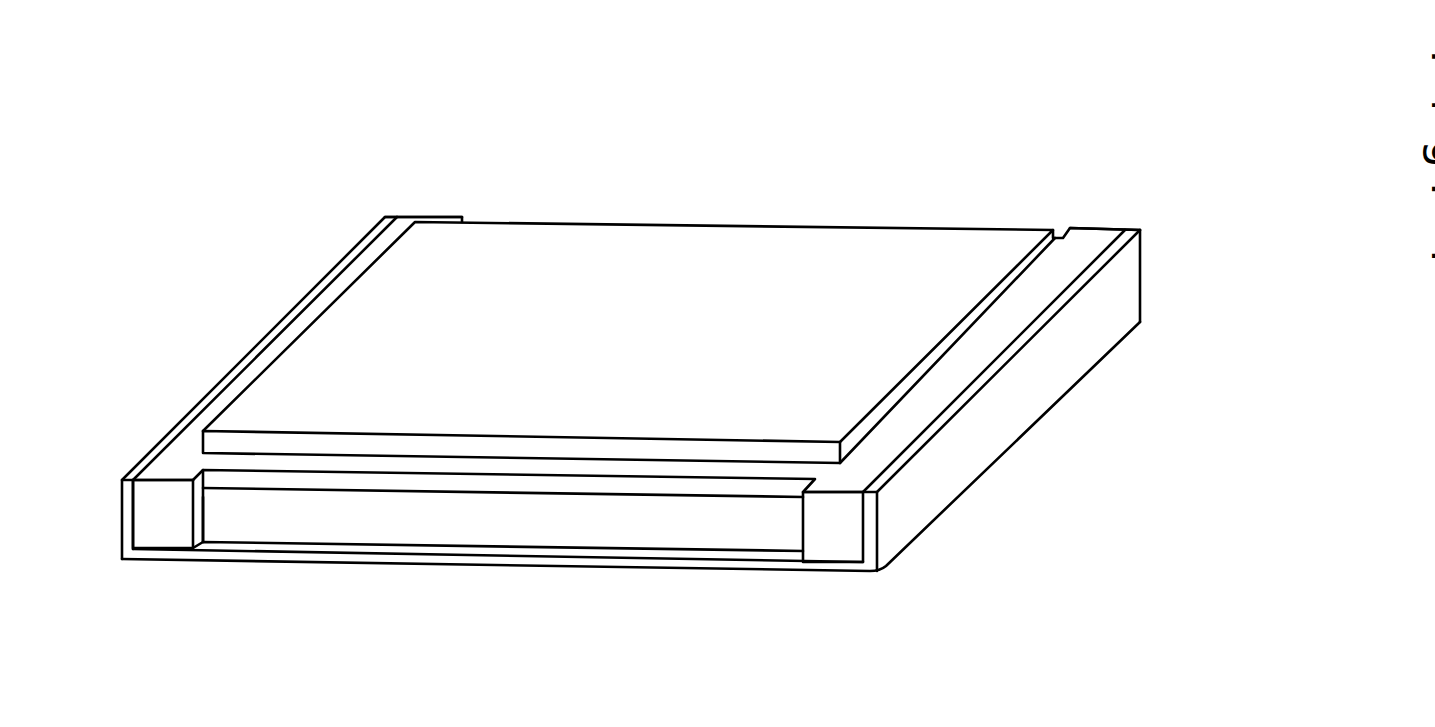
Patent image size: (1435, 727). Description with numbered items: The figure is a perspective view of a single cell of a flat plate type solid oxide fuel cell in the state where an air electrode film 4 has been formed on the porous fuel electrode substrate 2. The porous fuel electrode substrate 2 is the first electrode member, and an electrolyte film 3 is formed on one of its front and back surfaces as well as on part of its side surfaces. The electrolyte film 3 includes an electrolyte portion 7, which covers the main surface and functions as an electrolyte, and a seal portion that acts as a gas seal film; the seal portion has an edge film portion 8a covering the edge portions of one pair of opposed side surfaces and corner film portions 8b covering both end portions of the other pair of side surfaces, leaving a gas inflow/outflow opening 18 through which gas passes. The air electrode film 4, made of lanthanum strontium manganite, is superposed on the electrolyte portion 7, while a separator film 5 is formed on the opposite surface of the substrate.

The porous fuel electrode substrate 2 is at (597, 527).
The electrolyte film 3 is at (347, 481).
The air electrode film 4 is at (650, 257).
The separator film 5 is at (990, 450).
The electrolyte portion 7 is at (186, 447).
The edge film portion 8a is at (267, 350).
The corner film portion 8b is at (410, 220).
The gas inflow/outflow opening 18 is at (690, 520).